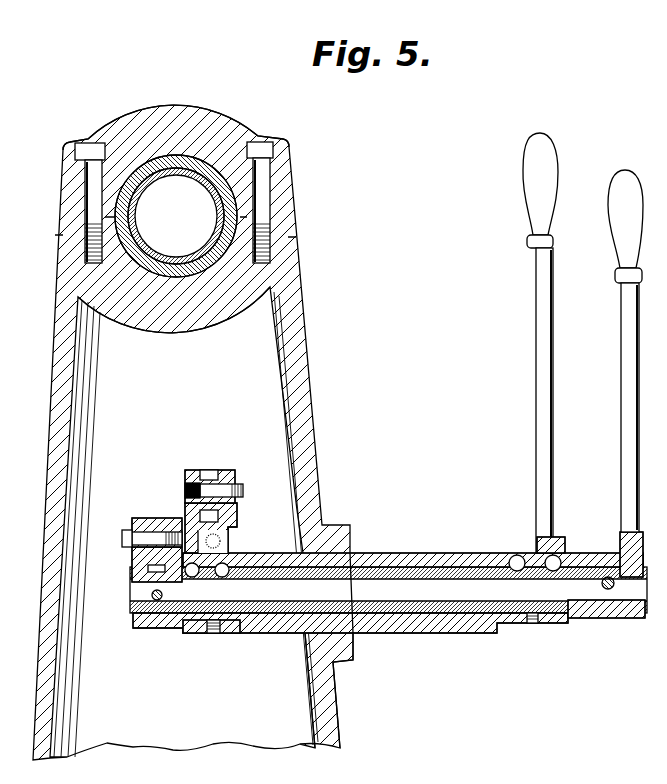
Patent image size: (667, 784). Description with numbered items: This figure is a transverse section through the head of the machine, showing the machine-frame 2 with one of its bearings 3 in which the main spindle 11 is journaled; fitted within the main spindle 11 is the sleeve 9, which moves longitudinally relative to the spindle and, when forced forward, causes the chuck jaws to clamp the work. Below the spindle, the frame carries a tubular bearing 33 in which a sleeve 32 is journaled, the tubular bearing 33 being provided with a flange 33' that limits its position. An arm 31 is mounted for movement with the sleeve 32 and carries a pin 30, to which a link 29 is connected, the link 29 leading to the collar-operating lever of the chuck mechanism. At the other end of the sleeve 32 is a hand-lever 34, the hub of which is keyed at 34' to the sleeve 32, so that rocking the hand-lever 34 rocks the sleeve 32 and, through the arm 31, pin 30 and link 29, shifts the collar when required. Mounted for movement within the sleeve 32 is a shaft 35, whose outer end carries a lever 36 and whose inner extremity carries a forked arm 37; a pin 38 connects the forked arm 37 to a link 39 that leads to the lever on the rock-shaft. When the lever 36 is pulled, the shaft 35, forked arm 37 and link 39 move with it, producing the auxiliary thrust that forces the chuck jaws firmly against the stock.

The machine-frame 2 is at (292, 338).
The bearing 3 is at (173, 116).
The sleeve 9 is at (172, 257).
The main spindle 11 is at (207, 180).
The link 29 is at (205, 470).
The pin 30 is at (240, 484).
The arm 31 is at (230, 530).
The sleeve 32 is at (382, 572).
The tubular bearing 33 is at (388, 609).
The flange 33' is at (341, 650).
The hand-lever 34 is at (518, 343).
The key 34' is at (526, 540).
The shaft 35 is at (592, 587).
The lever 36 is at (632, 443).
The forked arm 37 is at (130, 568).
The pin 38 is at (130, 532).
The link 39 is at (155, 515).